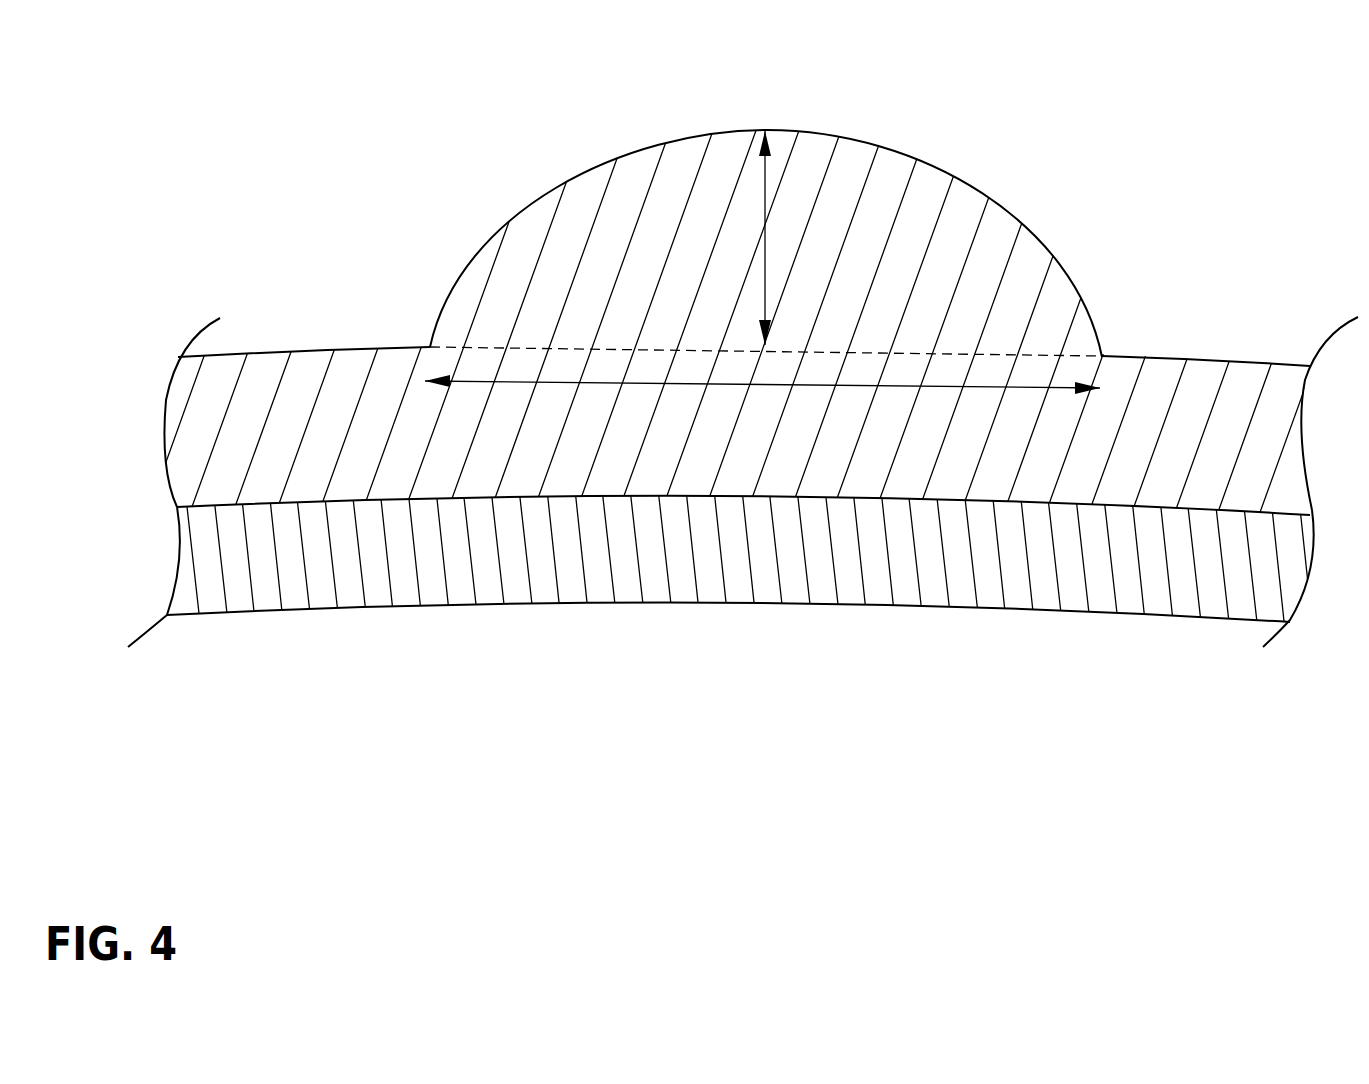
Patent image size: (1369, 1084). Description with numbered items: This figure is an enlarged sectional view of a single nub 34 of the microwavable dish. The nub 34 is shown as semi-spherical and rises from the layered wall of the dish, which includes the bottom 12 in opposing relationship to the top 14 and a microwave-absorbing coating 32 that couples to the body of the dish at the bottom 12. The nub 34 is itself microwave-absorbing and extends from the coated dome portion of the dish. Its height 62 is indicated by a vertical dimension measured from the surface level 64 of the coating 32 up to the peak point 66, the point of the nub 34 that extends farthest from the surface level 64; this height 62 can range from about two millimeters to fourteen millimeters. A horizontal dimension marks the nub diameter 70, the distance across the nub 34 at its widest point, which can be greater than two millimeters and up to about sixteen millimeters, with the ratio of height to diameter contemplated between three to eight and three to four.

The bottom 12 is at (333, 497).
The top 14 is at (1125, 620).
The microwave-absorbing coating 32 is at (340, 348).
The microwave-absorbing nub 34 is at (993, 198).
The height 62 is at (763, 225).
The surface level 64 is at (1147, 358).
The peak point 66 is at (765, 130).
The nub diameter 70 is at (853, 388).